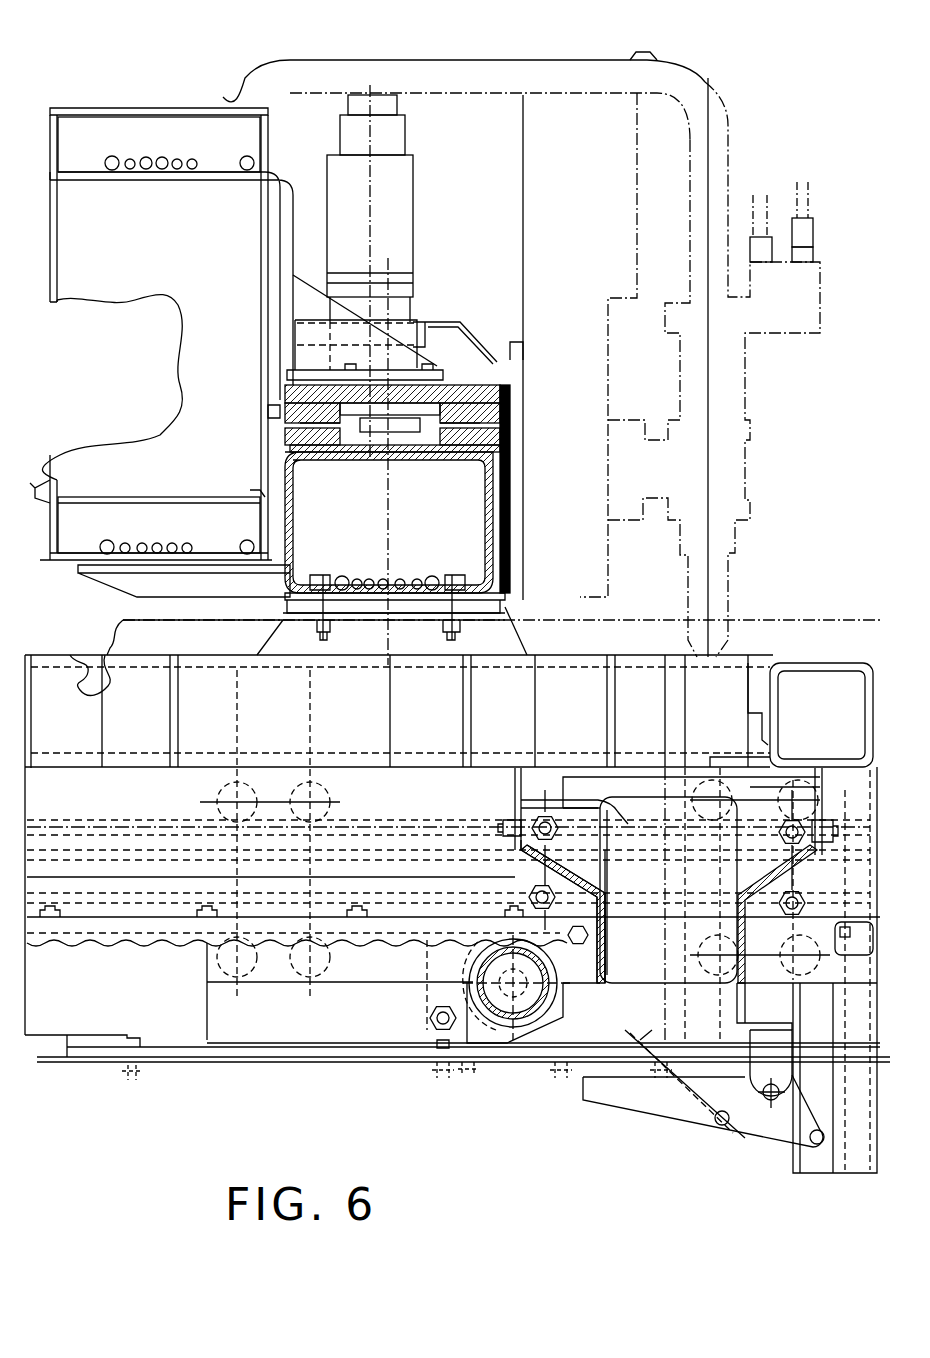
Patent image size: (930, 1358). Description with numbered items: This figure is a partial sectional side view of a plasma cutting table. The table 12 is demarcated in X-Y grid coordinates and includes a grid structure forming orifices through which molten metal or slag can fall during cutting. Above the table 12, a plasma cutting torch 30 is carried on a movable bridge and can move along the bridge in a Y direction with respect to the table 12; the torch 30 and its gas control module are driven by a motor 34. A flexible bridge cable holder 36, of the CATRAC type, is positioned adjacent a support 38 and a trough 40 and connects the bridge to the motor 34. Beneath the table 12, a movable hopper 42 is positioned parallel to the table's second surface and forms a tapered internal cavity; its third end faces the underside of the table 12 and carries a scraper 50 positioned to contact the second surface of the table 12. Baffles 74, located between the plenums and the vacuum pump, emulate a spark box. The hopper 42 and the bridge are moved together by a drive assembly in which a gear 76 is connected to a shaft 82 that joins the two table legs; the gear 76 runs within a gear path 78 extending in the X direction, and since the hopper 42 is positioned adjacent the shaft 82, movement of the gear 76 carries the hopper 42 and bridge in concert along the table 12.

The table 12 is at (33, 748).
The plasma cutting torch 30 is at (737, 472).
The motor 34 is at (404, 207).
The flexible bridge cable holder 36 is at (145, 158).
The support 38 is at (111, 115).
The trough 40 is at (43, 490).
The movable hopper 42 is at (563, 923).
The scraper 50 is at (835, 792).
The baffles 74 is at (537, 795).
The gear 76 is at (477, 1023).
The gear path 78 is at (158, 944).
The shaft 82 is at (520, 990).